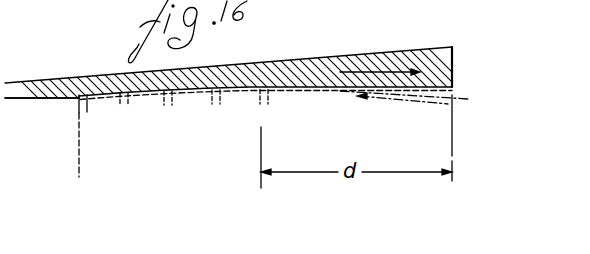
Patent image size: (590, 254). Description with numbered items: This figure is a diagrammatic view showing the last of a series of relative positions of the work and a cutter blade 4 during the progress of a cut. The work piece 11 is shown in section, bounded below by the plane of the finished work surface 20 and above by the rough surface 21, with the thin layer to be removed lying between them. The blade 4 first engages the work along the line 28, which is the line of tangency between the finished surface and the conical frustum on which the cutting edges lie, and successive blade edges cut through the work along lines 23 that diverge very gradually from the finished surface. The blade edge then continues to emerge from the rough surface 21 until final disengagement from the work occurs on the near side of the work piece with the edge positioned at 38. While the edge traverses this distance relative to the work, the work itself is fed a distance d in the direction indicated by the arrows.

The work piece 11 is at (312, 66).
The finished work surface 20 is at (454, 88).
The rough surface 21 is at (27, 98).
The blade 4 is at (78, 99).
The blade edge position at final disengagement 38 is at (79, 150).
The lines of cut 23 is at (288, 91).
The line of first engagement 28 is at (453, 139).